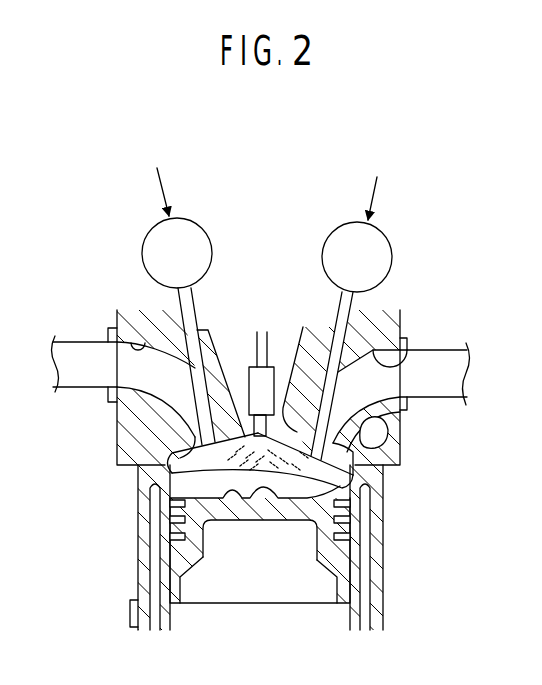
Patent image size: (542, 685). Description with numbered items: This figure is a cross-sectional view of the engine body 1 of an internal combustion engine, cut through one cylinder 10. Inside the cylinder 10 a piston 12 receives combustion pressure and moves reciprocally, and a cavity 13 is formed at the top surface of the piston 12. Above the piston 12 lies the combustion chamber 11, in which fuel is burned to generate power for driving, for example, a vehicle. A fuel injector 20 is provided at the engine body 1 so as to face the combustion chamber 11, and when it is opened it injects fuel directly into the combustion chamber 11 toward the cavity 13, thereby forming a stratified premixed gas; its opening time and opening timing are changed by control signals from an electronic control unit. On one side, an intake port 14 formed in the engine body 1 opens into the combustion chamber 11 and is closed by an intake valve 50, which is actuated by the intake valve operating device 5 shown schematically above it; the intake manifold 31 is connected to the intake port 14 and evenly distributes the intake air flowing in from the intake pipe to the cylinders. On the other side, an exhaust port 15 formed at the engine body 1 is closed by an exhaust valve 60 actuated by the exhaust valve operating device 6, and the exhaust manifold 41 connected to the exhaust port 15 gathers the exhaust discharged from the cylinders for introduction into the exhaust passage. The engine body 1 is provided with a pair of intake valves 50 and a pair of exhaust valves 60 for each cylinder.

The engine body 1 is at (136, 569).
The intake valve operating device 5 is at (192, 218).
The exhaust valve operating device 6 is at (387, 232).
The cylinder 10 is at (176, 474).
The combustion chamber 11 is at (323, 461).
The piston 12 is at (194, 538).
The cavity 13 is at (232, 500).
The intake port 14 is at (133, 343).
The exhaust port 15 is at (427, 348).
The fuel injector 20 is at (258, 383).
The intake manifold 31 is at (78, 388).
The exhaust manifold 41 is at (430, 400).
The intake valve 50 is at (210, 330).
The exhaust valve 60 is at (303, 327).